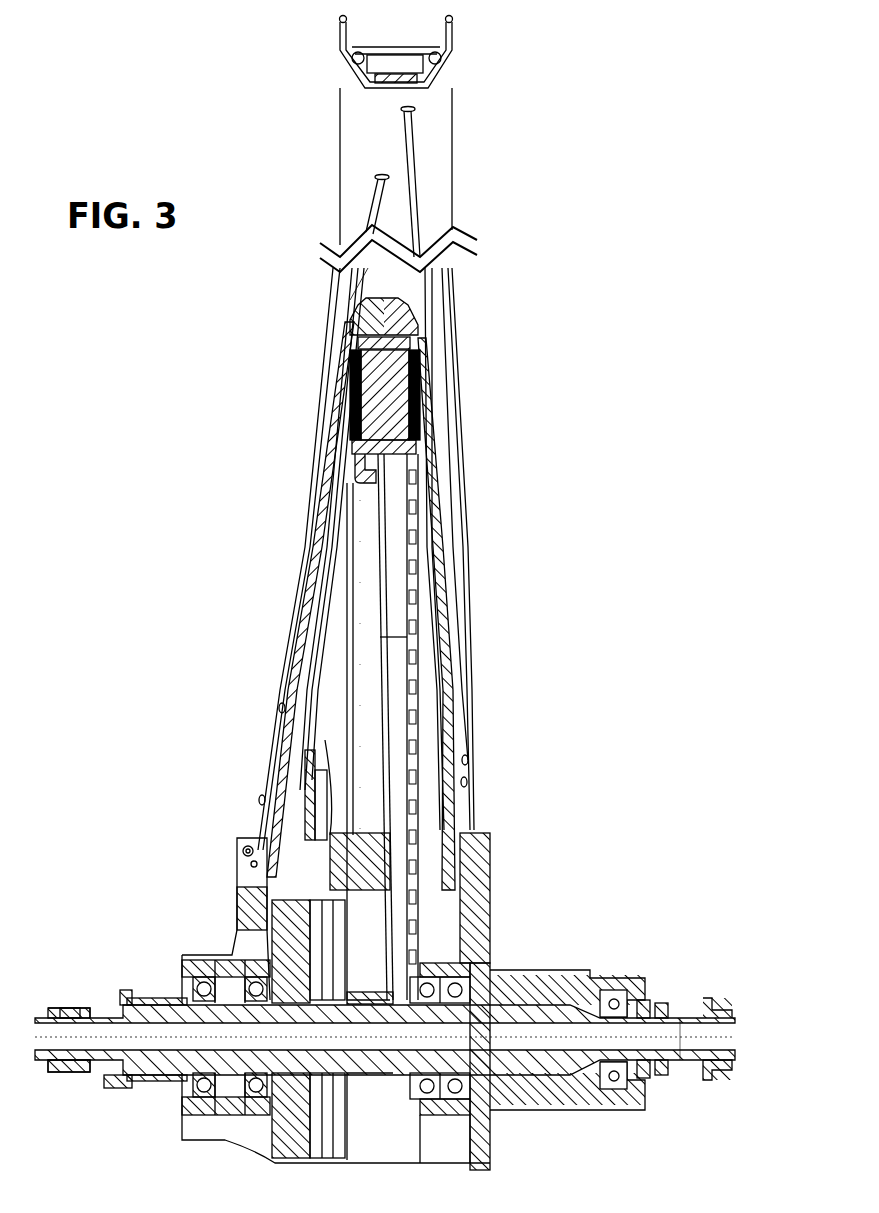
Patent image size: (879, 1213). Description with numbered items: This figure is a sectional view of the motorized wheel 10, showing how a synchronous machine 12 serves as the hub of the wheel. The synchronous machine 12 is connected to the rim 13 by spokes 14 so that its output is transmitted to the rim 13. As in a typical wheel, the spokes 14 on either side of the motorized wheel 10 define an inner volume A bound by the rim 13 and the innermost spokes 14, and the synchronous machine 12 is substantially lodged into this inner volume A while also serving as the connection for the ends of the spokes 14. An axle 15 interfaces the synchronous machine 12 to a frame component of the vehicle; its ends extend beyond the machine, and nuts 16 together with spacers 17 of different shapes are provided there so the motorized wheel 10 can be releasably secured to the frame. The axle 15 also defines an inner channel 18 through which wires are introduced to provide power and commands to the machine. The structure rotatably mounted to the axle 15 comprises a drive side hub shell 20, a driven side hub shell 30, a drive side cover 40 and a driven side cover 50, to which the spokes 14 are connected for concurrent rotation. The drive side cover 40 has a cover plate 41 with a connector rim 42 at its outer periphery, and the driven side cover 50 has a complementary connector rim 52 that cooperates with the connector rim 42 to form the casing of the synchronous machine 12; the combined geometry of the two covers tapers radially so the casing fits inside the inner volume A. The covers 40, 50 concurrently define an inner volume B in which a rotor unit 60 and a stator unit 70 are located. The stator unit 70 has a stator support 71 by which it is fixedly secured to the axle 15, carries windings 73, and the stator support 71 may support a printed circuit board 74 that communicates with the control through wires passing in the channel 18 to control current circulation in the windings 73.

The motorized wheel 10 is at (272, 128).
The rim 13 is at (412, 100).
The spokes 14 is at (418, 182).
The inner volume A is at (415, 291).
The inner volume B is at (387, 556).
The connector rim 52 is at (365, 315).
The connector rim 42 is at (418, 330).
The windings 73 is at (422, 400).
The rotor unit 60 is at (437, 385).
The cover plate 41 is at (445, 590).
The drive side cover 40 is at (457, 666).
The stator unit 70 is at (336, 495).
The synchronous machine 12 is at (306, 545).
The driven side cover 50 is at (291, 632).
The stator support 71 is at (360, 672).
The printed circuit board 74 is at (312, 722).
The driven side hub shell 30 is at (200, 892).
The drive side hub shell 20 is at (548, 928).
The axle 15 is at (742, 1012).
The nuts 16 is at (70, 1006).
The spacers 17 is at (108, 1000).
The inner channel 18 is at (682, 1030).